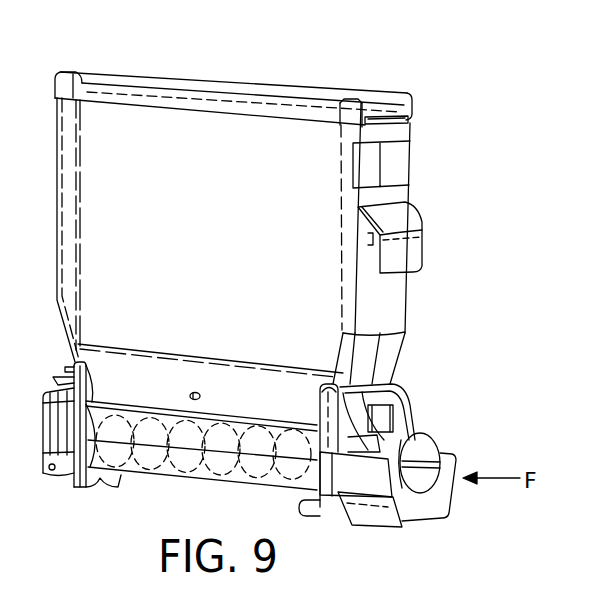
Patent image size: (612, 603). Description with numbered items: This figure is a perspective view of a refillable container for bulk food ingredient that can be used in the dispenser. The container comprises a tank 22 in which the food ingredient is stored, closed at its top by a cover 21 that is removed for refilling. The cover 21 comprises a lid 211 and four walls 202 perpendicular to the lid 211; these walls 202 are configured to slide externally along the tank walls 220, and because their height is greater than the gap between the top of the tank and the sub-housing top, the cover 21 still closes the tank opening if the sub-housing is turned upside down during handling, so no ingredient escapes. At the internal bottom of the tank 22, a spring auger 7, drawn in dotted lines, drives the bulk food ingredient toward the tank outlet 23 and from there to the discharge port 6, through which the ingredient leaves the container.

The cover 21 is at (430, 83).
The lid 211 is at (287, 88).
The walls 202 is at (328, 115).
The tank 22 is at (163, 218).
The tank walls 220 is at (322, 325).
The discharge port 6 is at (404, 433).
The tank outlet 23 is at (340, 437).
The spring auger 7 is at (183, 463).